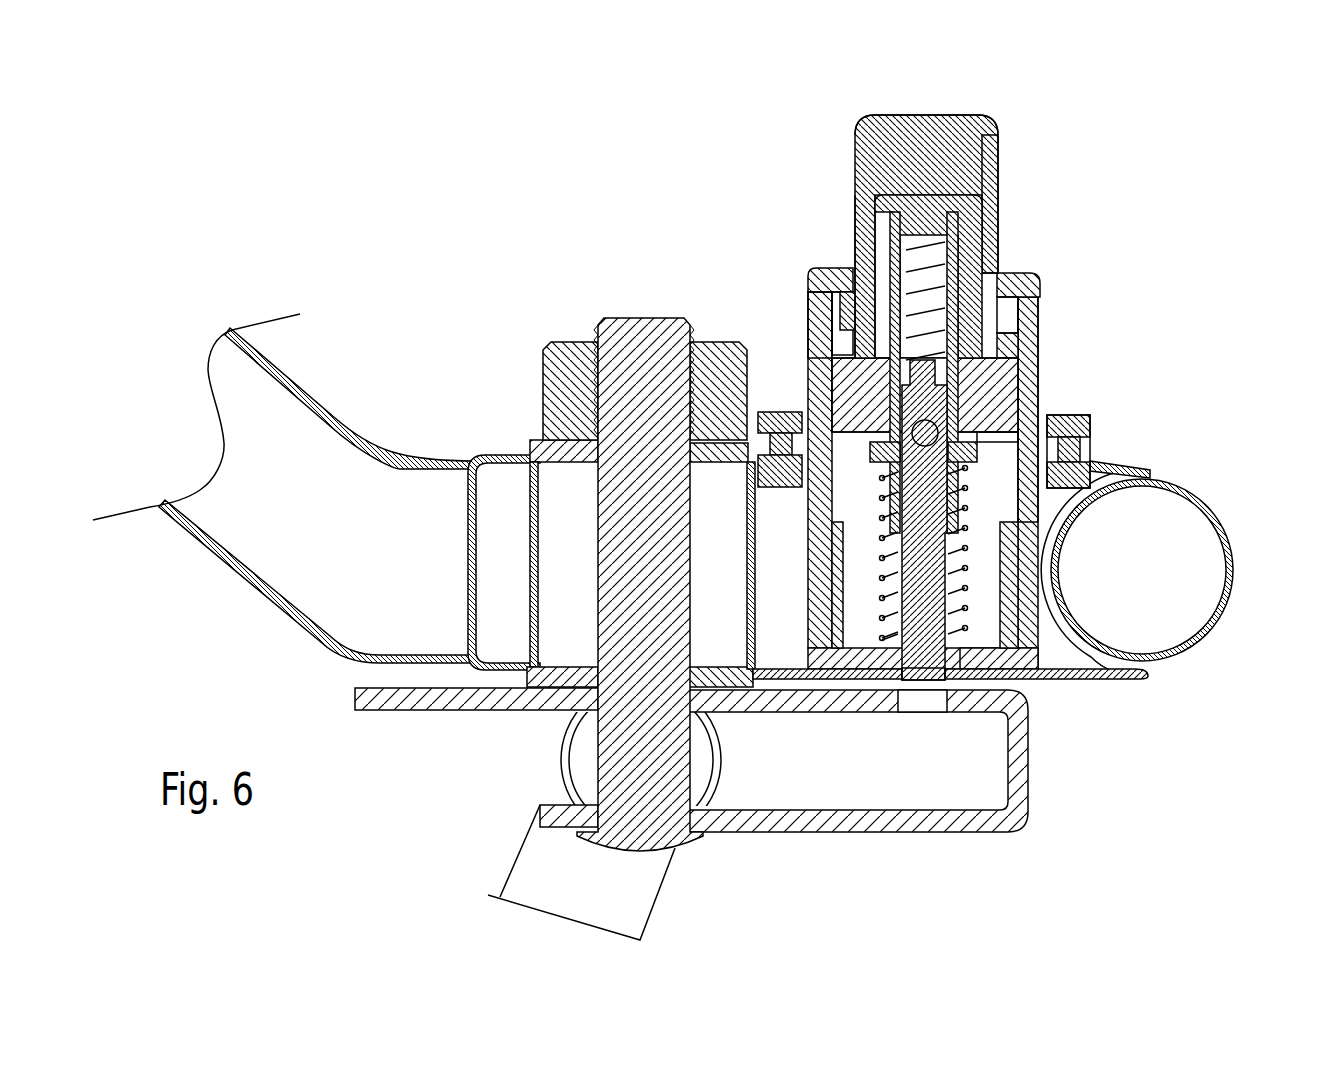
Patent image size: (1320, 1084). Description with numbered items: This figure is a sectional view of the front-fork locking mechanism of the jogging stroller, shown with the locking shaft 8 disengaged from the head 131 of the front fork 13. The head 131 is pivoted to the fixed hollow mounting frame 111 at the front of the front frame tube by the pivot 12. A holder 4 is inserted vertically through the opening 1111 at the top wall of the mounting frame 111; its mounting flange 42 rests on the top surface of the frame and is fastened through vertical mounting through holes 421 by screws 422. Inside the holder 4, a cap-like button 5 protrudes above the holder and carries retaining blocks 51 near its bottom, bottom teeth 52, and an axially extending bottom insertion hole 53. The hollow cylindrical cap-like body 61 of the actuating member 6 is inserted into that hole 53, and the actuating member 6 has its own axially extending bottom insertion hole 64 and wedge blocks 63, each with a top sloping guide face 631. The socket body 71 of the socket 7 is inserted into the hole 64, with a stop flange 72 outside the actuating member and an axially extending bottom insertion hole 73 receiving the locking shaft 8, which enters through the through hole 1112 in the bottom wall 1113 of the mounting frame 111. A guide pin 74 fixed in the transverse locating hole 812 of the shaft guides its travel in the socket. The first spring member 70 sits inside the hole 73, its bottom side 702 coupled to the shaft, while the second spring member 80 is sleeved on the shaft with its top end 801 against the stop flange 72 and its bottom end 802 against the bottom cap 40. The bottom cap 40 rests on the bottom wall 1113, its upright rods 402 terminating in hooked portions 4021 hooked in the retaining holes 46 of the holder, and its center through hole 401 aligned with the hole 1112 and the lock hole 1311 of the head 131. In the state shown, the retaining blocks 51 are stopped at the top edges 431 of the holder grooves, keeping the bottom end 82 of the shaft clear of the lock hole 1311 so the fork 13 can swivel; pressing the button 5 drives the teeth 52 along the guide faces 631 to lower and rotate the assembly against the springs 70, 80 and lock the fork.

The holder 4 is at (1054, 320).
The cap-like button 5 is at (906, 112).
The actuating member 6 is at (926, 188).
The socket 7 is at (957, 210).
The locking shaft 8 is at (884, 578).
The pivot 12 is at (628, 330).
The front fork 13 is at (520, 853).
The bottom cap 40 is at (1068, 682).
The mounting flange 42 is at (1100, 462).
The retaining holes 46 is at (1234, 592).
The retaining blocks 51 is at (813, 340).
The bottom teeth 52 is at (812, 295).
The axially extending bottom insertion hole 53 is at (997, 183).
The hollow cylindrical cap-like body 61 is at (997, 211).
The wedge blocks 63 is at (770, 412).
The axially extending bottom insertion hole 64 is at (836, 266).
The first spring member 70 is at (997, 240).
The socket body 71 is at (858, 218).
The stop flange 72 is at (977, 453).
The axially extending bottom insertion hole 73 is at (997, 250).
The guide pin 74 is at (947, 418).
The second spring member 80 is at (1022, 602).
The bottom end 82 is at (925, 682).
The fixed hollow mounting frame 111 is at (487, 455).
The head 131 is at (1030, 715).
The center through hole 401 is at (1033, 697).
The upright rods 402 is at (808, 618).
The vertical mounting through holes 421 is at (1095, 452).
The screw 422 is at (760, 470).
The top edges 431 is at (848, 287).
The top sloping guide face 631 is at (795, 412).
The bottom side 702 is at (1040, 353).
The top end 801 is at (962, 470).
The bottom end 802 is at (885, 642).
The transverse locating hole 812 is at (1005, 415).
The opening 1111 is at (745, 445).
The through hole 1112 is at (962, 687).
The bottom wall 1113 is at (793, 679).
The lock hole 1311 is at (903, 715).
The hooked portion 4021 is at (805, 515).